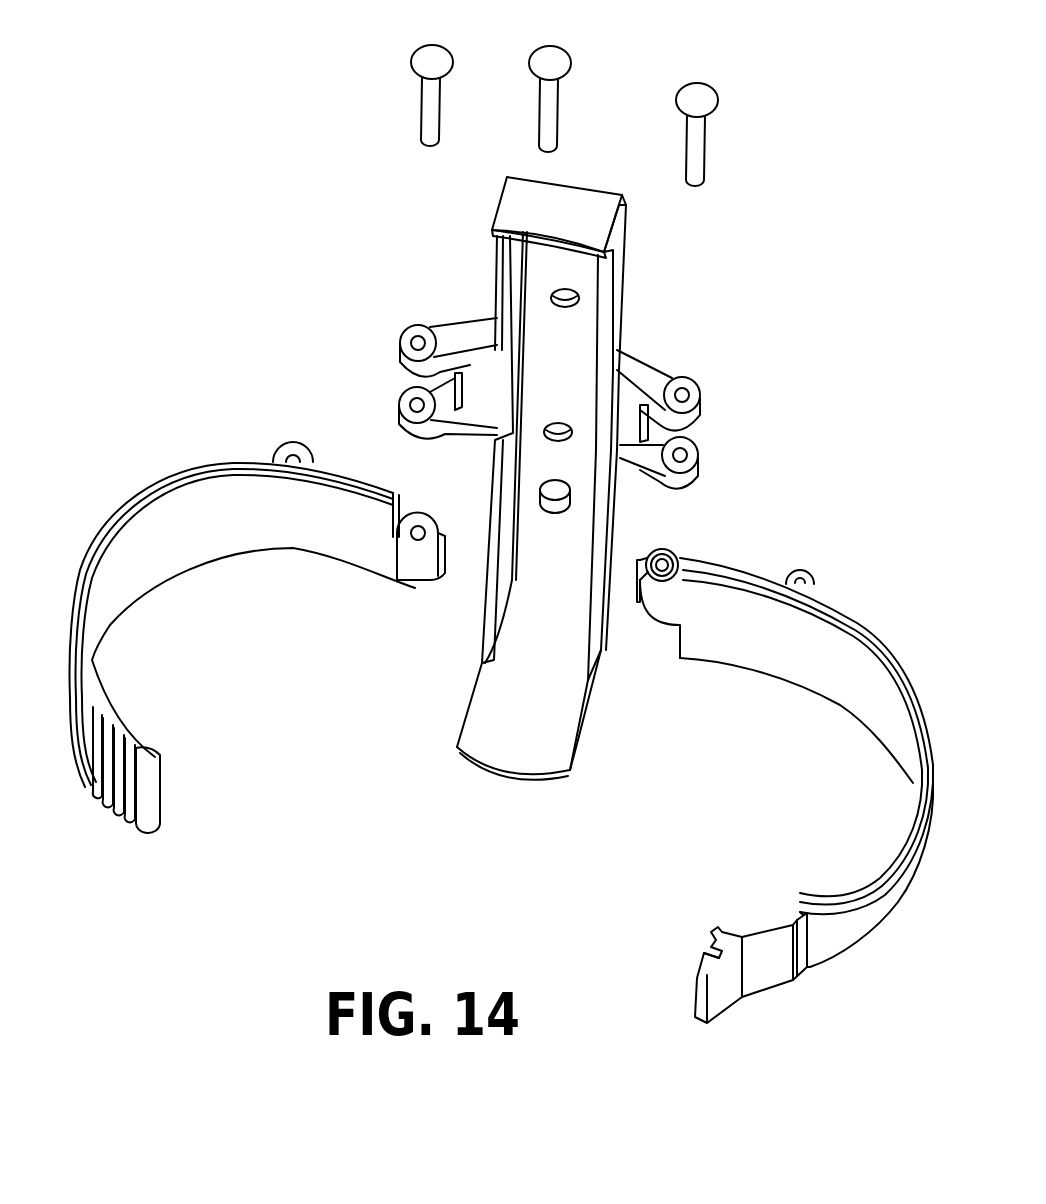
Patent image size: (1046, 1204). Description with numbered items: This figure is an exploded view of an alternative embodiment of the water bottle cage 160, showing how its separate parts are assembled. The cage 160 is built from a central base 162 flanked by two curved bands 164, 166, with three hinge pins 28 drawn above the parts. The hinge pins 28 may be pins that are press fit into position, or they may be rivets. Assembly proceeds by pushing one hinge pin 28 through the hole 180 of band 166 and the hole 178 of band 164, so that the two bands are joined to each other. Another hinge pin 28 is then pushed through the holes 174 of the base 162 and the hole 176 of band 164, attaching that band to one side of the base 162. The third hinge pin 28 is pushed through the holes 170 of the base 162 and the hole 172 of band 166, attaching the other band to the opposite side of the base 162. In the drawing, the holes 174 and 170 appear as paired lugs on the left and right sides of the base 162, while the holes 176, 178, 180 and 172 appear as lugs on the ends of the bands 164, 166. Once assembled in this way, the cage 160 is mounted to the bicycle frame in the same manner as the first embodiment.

The hinge pin 28 is at (423, 65).
The water bottle cage 160 is at (805, 257).
The base 162 is at (622, 270).
The band 164 is at (193, 533).
The band 166 is at (810, 648).
The holes 170 is at (688, 393).
The hole 172 is at (812, 580).
The holes 174 is at (400, 338).
The hole 176 is at (292, 458).
The hole 178 is at (418, 540).
The hole 180 is at (668, 562).